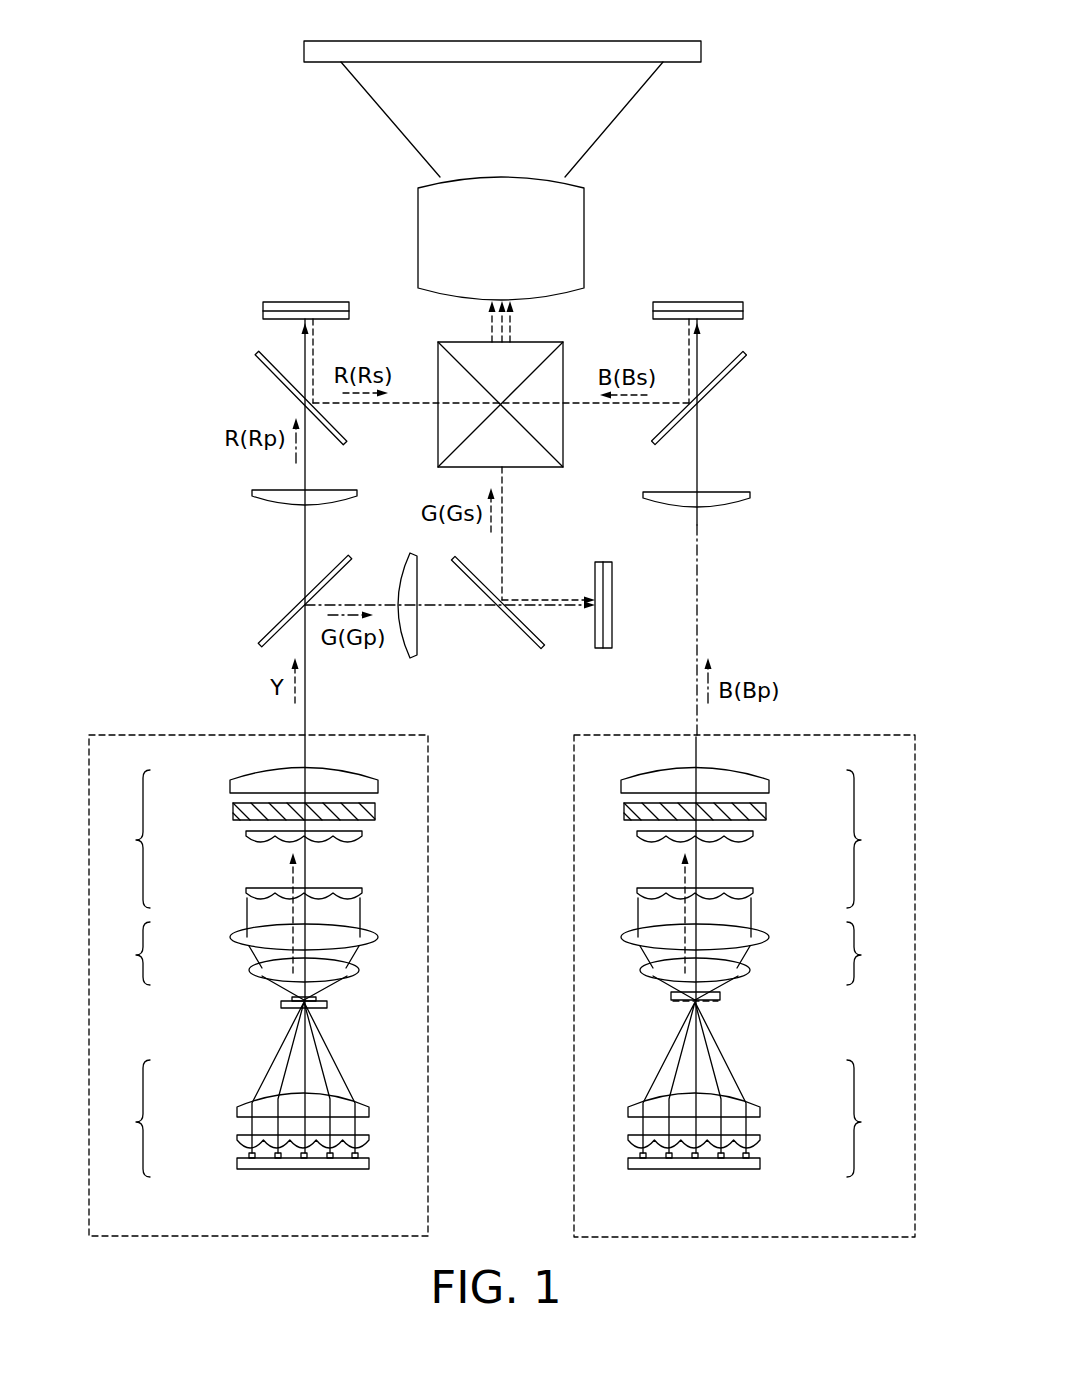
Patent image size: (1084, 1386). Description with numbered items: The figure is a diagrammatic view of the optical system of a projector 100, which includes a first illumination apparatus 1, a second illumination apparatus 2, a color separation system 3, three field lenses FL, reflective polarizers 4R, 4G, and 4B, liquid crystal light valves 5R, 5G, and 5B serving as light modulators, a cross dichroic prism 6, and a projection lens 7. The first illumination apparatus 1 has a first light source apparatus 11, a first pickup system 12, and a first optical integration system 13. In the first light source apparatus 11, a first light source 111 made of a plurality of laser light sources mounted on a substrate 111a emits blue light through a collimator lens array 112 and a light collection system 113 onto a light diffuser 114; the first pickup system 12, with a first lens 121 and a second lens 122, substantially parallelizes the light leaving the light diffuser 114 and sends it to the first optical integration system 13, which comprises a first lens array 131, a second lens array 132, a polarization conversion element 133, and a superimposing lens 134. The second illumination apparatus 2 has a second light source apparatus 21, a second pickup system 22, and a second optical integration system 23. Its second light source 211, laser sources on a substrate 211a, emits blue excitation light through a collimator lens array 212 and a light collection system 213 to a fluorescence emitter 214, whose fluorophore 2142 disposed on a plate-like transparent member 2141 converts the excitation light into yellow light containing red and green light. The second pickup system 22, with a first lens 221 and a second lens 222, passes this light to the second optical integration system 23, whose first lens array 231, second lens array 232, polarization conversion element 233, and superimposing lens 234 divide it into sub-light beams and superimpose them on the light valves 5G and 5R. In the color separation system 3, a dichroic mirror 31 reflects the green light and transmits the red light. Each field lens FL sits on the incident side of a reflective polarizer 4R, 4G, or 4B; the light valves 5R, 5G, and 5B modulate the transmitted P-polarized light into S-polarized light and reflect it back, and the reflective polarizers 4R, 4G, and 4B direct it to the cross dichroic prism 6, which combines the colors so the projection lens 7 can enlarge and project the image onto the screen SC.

The projector 100 is at (777, 52).
The screen SC is at (684, 63).
The projection lens 7 is at (584, 230).
The cross dichroic prism 6 is at (543, 338).
The liquid crystal light valve 5R is at (263, 310).
The liquid crystal light valve 5G is at (605, 648).
The liquid crystal light valve 5B is at (743, 305).
The reflective polarizer 4R is at (270, 378).
The reflective polarizer 4G is at (523, 637).
The reflective polarizer 4B is at (732, 377).
The field lens FL is at (287, 490).
The color separation system 3 is at (212, 577).
The dichroic mirror 31 is at (270, 627).
The second illumination apparatus 2 is at (132, 733).
The first illumination apparatus 1 is at (861, 733).
The second optical integration system 23 is at (239, 838).
The superimposing lens 234 is at (230, 783).
The polarization conversion element 233 is at (233, 808).
The second lens array 232 is at (246, 834).
The first lens array 231 is at (246, 890).
The second pickup system 22 is at (239, 949).
The second lens 222 is at (230, 937).
The first lens 221 is at (249, 970).
The second light source apparatus 21 is at (258, 1102).
The fluorescence emitter 214 is at (262, 1005).
The fluorophore 2142 is at (320, 997).
The transparent member 2141 is at (327, 1008).
The light collection system 213 is at (237, 1107).
The collimator lens array 212 is at (237, 1137).
The second light source 211 is at (246, 1155).
The substrate 211a is at (260, 1169).
The first optical integration system 13 is at (757, 838).
The superimposing lens 134 is at (769, 784).
The polarization conversion element 133 is at (766, 808).
The second lens array 132 is at (753, 834).
The first lens array 131 is at (753, 890).
The first pickup system 12 is at (757, 949).
The second lens 122 is at (769, 937).
The first lens 121 is at (750, 970).
The first light source apparatus 11 is at (761, 1106).
The light diffuser 114 is at (720, 997).
The light collection system 113 is at (760, 1110).
The collimator lens array 112 is at (760, 1137).
The first light source 111 is at (752, 1155).
The substrate 111a is at (735, 1169).